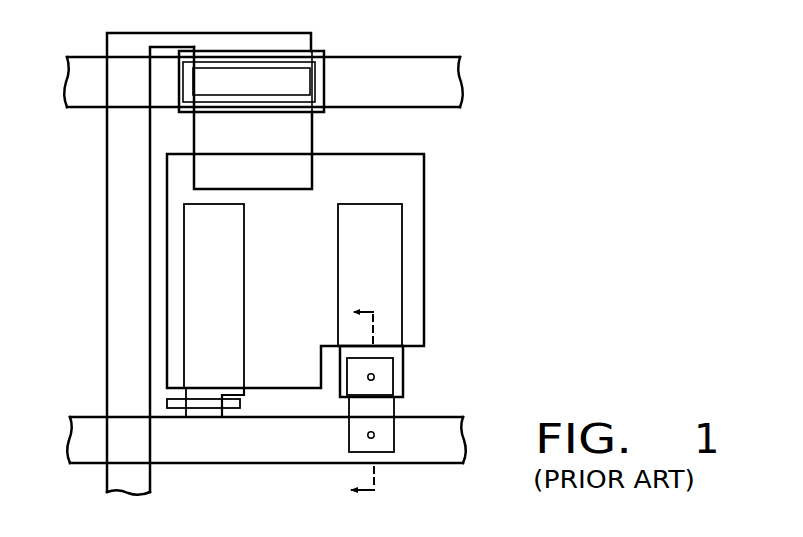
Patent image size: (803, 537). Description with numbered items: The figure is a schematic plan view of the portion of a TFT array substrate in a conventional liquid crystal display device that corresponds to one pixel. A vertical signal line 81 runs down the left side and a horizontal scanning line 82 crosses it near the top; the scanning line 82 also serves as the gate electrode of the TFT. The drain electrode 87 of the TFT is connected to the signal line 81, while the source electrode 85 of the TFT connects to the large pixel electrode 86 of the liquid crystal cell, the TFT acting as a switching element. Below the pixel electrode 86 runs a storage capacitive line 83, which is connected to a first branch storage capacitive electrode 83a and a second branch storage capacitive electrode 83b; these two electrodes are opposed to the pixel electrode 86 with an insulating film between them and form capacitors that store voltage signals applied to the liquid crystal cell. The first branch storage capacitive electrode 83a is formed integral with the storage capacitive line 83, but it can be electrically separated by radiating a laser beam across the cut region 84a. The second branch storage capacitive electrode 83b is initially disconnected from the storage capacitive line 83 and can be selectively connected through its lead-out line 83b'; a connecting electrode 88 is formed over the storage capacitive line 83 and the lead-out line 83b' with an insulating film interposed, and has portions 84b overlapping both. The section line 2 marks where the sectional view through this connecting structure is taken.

The signal line 81 is at (107, 210).
The scanning line 82 is at (67, 85).
The storage capacitive line 83 is at (70, 440).
The first branch storage capacitive electrode 83a is at (244, 312).
The second branch storage capacitive electrode 83b is at (406, 275).
The lead-out line 83b' is at (402, 371).
The cut region 84a is at (207, 410).
The overlapping portions 84b is at (395, 395).
The source electrode 85 is at (313, 138).
The pixel electrode 86 is at (424, 192).
The drain electrode 87 is at (252, 40).
The connecting electrode 88 is at (362, 409).
The section line 2 is at (362, 402).